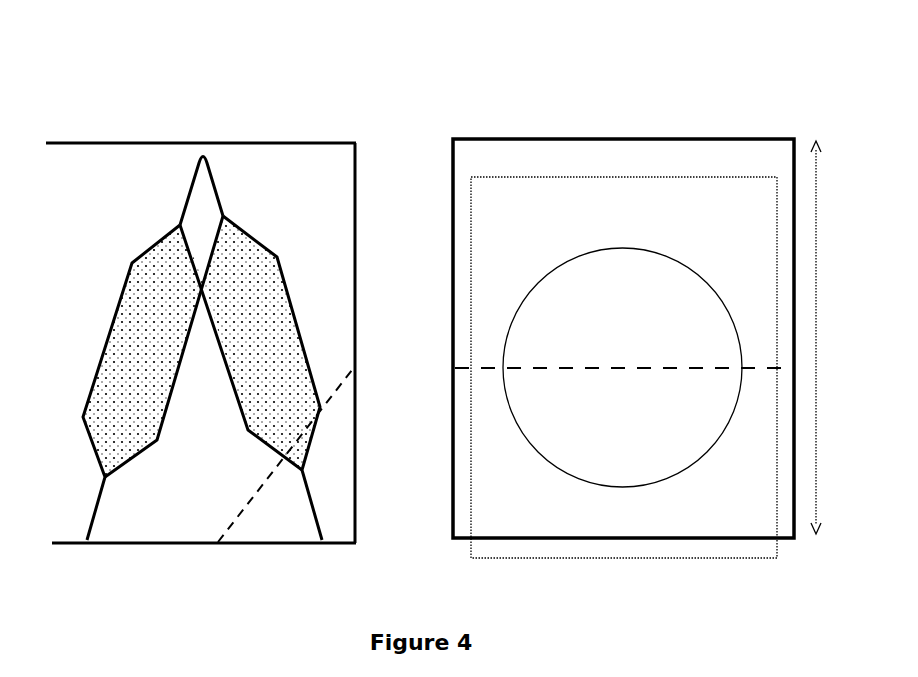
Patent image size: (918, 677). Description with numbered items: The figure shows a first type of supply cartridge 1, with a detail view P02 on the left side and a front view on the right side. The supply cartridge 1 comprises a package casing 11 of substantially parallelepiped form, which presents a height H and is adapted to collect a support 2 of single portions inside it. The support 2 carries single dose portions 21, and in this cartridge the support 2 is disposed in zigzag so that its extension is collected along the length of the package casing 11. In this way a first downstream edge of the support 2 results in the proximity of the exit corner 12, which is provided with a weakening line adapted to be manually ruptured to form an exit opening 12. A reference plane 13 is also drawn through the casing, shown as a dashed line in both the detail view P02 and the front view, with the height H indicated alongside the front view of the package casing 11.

The detail view P02 is at (71, 51).
The supply cartridge 1 is at (417, 313).
The package casing 11 is at (414, 334).
The exit corner 12 is at (345, 550).
The support of single portions 2 is at (185, 191).
The single dose portions 21 is at (412, 378).
The reference plane 13 is at (255, 490).
The height H is at (831, 337).